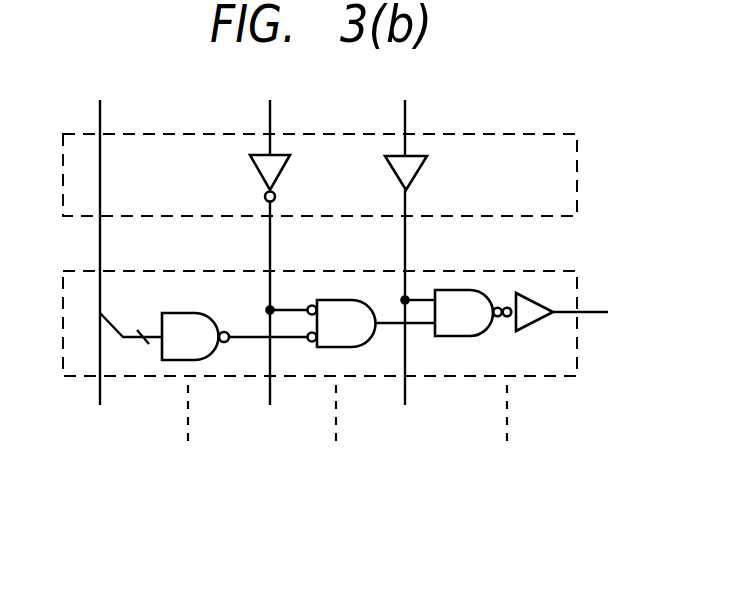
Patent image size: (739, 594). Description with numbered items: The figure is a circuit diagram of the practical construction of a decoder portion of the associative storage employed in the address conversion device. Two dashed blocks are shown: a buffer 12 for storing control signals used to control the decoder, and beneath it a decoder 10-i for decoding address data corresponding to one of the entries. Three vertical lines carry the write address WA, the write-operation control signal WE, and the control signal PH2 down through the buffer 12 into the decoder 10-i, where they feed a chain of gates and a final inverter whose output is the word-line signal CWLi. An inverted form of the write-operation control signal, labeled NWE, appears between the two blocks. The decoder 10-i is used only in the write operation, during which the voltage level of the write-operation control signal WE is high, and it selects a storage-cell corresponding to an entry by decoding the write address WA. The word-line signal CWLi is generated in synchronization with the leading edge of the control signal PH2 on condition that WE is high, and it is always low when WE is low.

The buffer 12 is at (578, 153).
The decoder 10-i is at (578, 278).
The write address WA is at (98, 233).
The write-operation control signal WE is at (269, 108).
The control signal PH2 is at (407, 233).
The inverted write enable signal NWE is at (317, 303).
The word-line signal CWLi is at (614, 314).